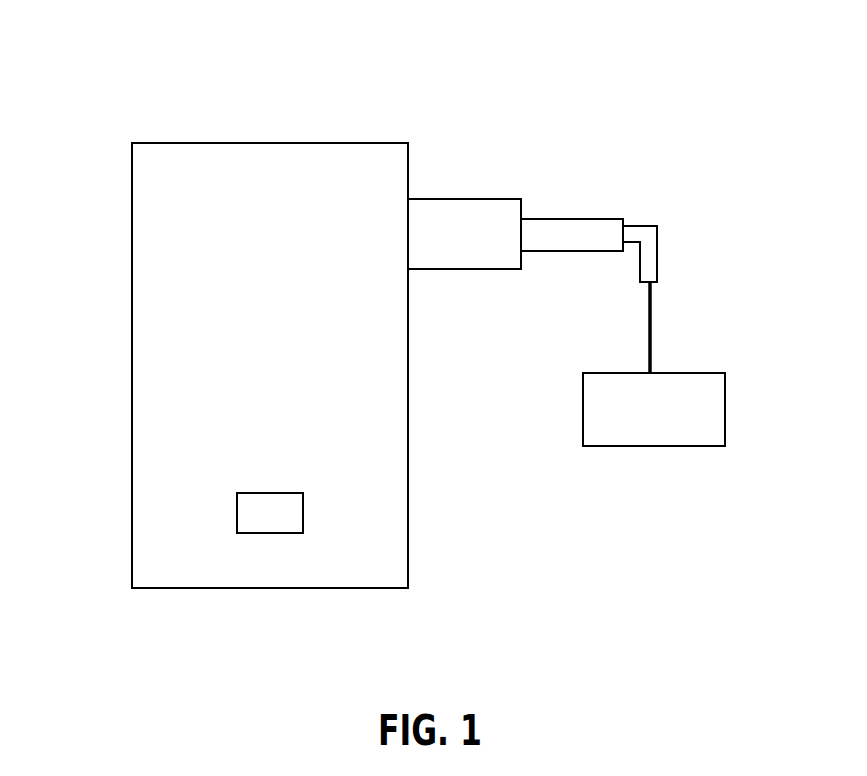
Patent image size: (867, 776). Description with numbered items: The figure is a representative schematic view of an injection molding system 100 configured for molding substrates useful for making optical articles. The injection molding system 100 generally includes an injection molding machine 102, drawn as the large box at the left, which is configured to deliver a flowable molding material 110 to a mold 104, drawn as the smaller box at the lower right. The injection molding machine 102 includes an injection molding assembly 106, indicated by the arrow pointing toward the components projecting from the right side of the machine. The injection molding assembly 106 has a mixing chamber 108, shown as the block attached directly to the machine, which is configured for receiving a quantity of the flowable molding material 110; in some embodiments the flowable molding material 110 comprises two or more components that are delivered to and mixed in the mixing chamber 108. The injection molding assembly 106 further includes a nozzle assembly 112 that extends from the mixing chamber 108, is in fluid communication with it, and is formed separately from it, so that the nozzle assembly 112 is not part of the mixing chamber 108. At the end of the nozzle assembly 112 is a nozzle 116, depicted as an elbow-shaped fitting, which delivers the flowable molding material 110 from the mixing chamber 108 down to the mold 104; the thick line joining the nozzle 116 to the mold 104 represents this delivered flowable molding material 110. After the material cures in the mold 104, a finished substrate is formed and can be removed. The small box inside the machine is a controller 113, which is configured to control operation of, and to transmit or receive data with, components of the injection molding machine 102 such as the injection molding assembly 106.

The injection molding system 100 is at (716, 134).
The injection molding machine 102 is at (167, 339).
The mold 104 is at (672, 421).
The injection molding assembly 106 is at (557, 302).
The mixing chamber 108 is at (467, 220).
The flowable molding material 110 is at (652, 335).
The nozzle assembly 112 is at (590, 225).
The controller 113 is at (284, 513).
The nozzle 116 is at (658, 245).